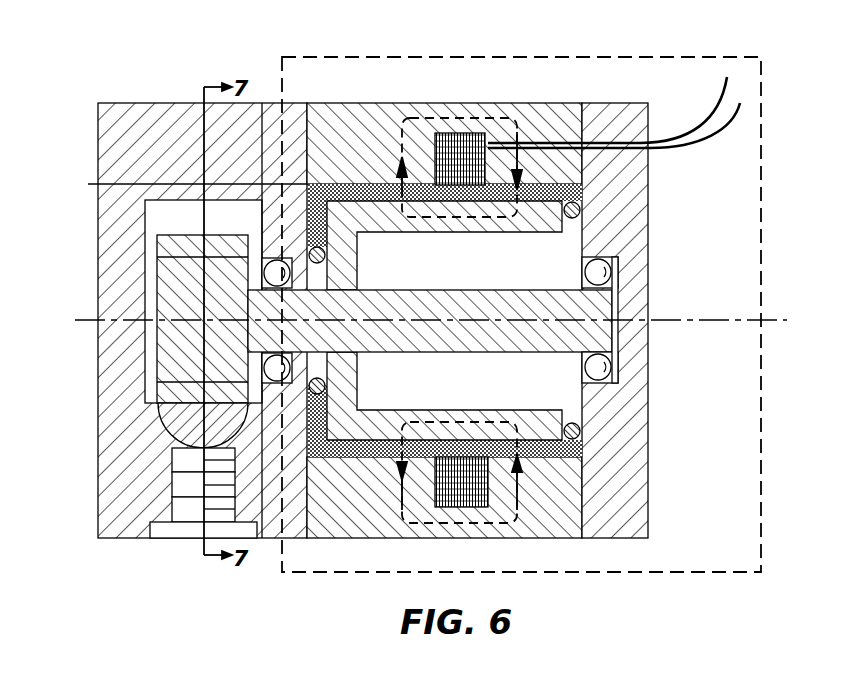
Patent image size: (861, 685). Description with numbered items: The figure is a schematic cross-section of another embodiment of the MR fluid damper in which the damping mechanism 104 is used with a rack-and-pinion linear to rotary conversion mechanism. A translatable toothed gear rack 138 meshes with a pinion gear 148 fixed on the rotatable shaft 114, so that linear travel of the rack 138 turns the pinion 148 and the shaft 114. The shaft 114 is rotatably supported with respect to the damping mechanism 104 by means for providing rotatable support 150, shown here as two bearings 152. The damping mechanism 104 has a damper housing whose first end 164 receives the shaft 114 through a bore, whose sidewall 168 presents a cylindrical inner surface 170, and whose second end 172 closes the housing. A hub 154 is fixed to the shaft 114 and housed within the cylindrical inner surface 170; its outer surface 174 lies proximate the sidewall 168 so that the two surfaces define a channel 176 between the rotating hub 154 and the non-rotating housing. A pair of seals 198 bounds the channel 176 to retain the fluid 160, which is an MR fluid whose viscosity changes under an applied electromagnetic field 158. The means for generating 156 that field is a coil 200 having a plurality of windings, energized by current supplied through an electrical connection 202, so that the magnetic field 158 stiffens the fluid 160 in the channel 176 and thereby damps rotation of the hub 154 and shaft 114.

The damping mechanism 104 is at (666, 50).
The shaft 114 is at (592, 335).
The toothed gear rack 138 is at (172, 424).
The pinion gear 148 is at (168, 291).
The means for providing rotatable support 150 is at (623, 262).
The bearing 152 is at (597, 273).
The hub 154 is at (540, 205).
The means for generating electromagnetic field 156 is at (488, 476).
The electromagnetic field 158 is at (533, 500).
The fluid 160 is at (587, 448).
The first end 164 is at (254, 127).
The sidewall 168 is at (350, 115).
The cylindrical inner surface 170 is at (370, 183).
The second end 172 is at (648, 120).
The outer surface 174 is at (367, 443).
The channel 176 is at (582, 192).
The seal 198 is at (315, 245).
The coil 200 is at (467, 507).
The electrical connection 202 is at (737, 125).